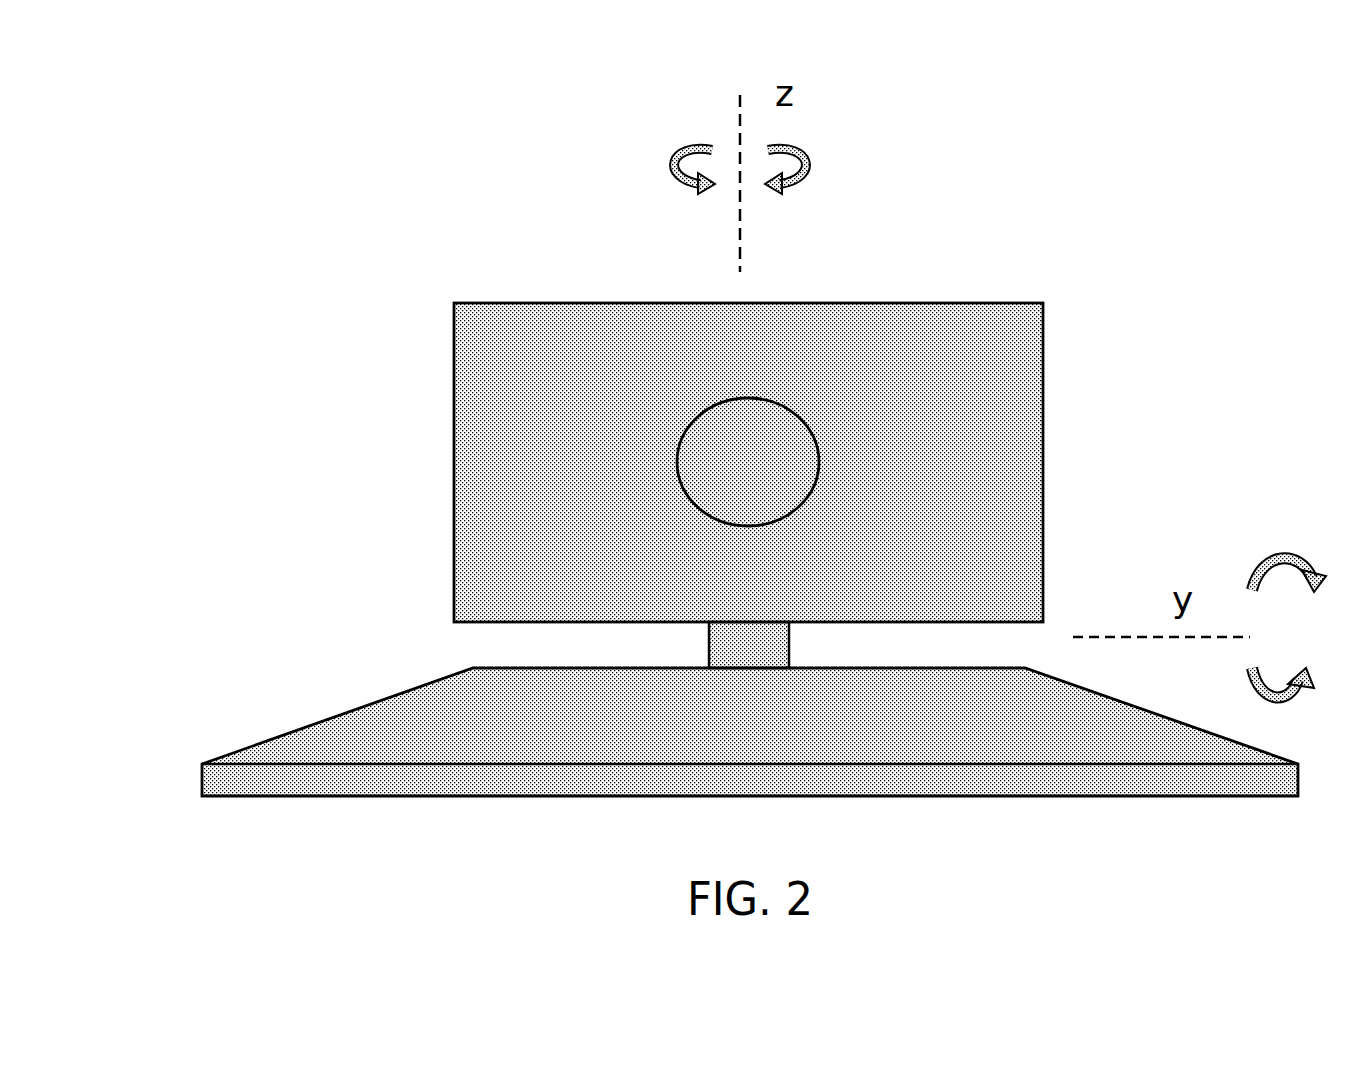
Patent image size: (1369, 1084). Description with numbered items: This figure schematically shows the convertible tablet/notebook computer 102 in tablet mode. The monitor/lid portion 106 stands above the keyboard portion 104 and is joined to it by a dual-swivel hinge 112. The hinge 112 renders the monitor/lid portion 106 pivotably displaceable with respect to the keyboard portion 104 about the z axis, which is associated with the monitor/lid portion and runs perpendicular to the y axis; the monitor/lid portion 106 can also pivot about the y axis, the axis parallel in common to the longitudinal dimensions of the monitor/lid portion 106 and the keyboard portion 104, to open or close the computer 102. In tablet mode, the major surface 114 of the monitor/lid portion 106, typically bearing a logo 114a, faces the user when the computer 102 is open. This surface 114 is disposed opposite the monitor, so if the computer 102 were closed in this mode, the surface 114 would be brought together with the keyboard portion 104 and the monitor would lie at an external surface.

The computer 102 is at (345, 589).
The keyboard portion 104 is at (217, 780).
The monitor/lid portion 106 is at (472, 414).
The dual-swivel hinge 112 is at (709, 647).
The major surface 114 is at (724, 366).
The logo 114a is at (788, 445).